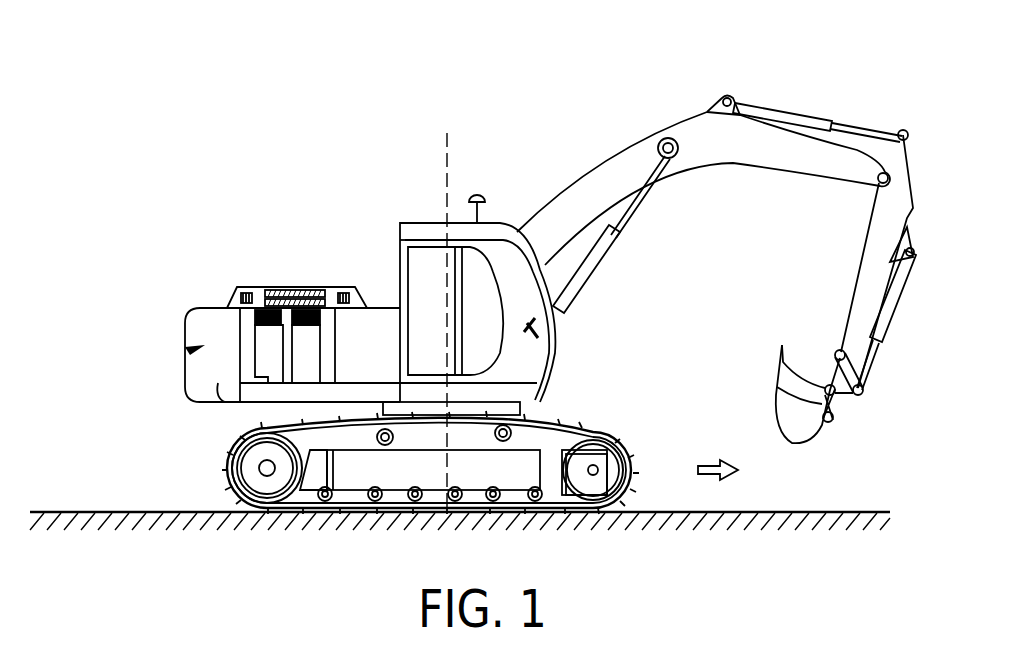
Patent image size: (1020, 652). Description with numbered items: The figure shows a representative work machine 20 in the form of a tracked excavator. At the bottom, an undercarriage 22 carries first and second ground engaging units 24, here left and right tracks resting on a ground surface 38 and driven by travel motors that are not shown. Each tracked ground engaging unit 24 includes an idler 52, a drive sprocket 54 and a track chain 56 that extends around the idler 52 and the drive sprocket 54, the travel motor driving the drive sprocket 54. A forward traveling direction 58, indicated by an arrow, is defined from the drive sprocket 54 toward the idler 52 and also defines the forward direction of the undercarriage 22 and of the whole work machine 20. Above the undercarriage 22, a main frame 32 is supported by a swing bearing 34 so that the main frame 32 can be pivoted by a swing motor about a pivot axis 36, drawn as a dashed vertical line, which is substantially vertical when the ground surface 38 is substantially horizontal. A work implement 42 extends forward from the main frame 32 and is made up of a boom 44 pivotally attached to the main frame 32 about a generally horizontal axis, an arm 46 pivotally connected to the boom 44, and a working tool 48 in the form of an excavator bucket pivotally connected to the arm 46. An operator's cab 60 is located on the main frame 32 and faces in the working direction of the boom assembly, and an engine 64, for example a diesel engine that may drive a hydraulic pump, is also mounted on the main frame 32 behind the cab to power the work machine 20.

The work machine 20 is at (800, 58).
The undercarriage 22 is at (224, 476).
The ground engaging units 24 is at (441, 477).
The main frame 32 is at (255, 395).
The swing bearing 34 is at (520, 408).
The pivot axis 36 is at (447, 135).
The ground surface 38 is at (222, 511).
The work implement 42 is at (592, 137).
The boom 44 is at (673, 160).
The arm 46 is at (866, 252).
The working tool 48 is at (795, 445).
The idler 52 is at (622, 456).
The drive sprocket 54 is at (305, 512).
The track chain 56 is at (508, 512).
The forward traveling direction 58 is at (713, 462).
The operator's cab 60 is at (423, 235).
The engine 64 is at (236, 292).